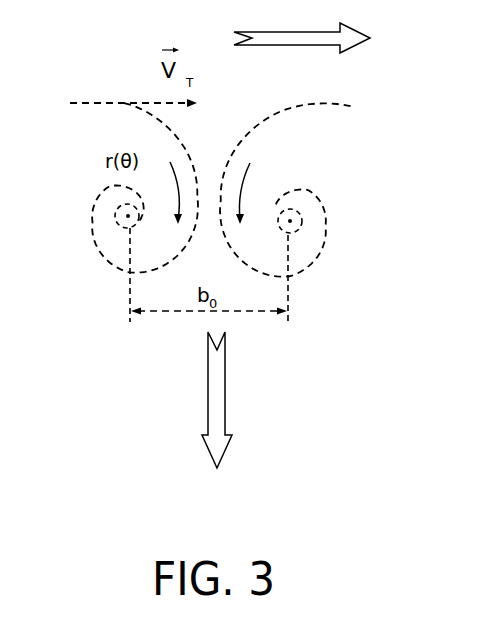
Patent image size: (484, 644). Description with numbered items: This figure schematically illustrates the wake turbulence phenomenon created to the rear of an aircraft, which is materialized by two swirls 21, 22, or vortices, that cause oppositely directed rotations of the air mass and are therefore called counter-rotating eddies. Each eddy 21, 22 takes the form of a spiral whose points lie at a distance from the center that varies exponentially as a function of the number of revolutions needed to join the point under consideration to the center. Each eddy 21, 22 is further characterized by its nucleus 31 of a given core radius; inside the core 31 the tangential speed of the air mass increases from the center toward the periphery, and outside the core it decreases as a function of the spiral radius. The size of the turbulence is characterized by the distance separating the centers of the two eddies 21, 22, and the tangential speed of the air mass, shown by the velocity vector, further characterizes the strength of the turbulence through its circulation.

The swirl 21 is at (119, 144).
The swirl 22 is at (322, 166).
The nucleus 31 is at (211, 260).